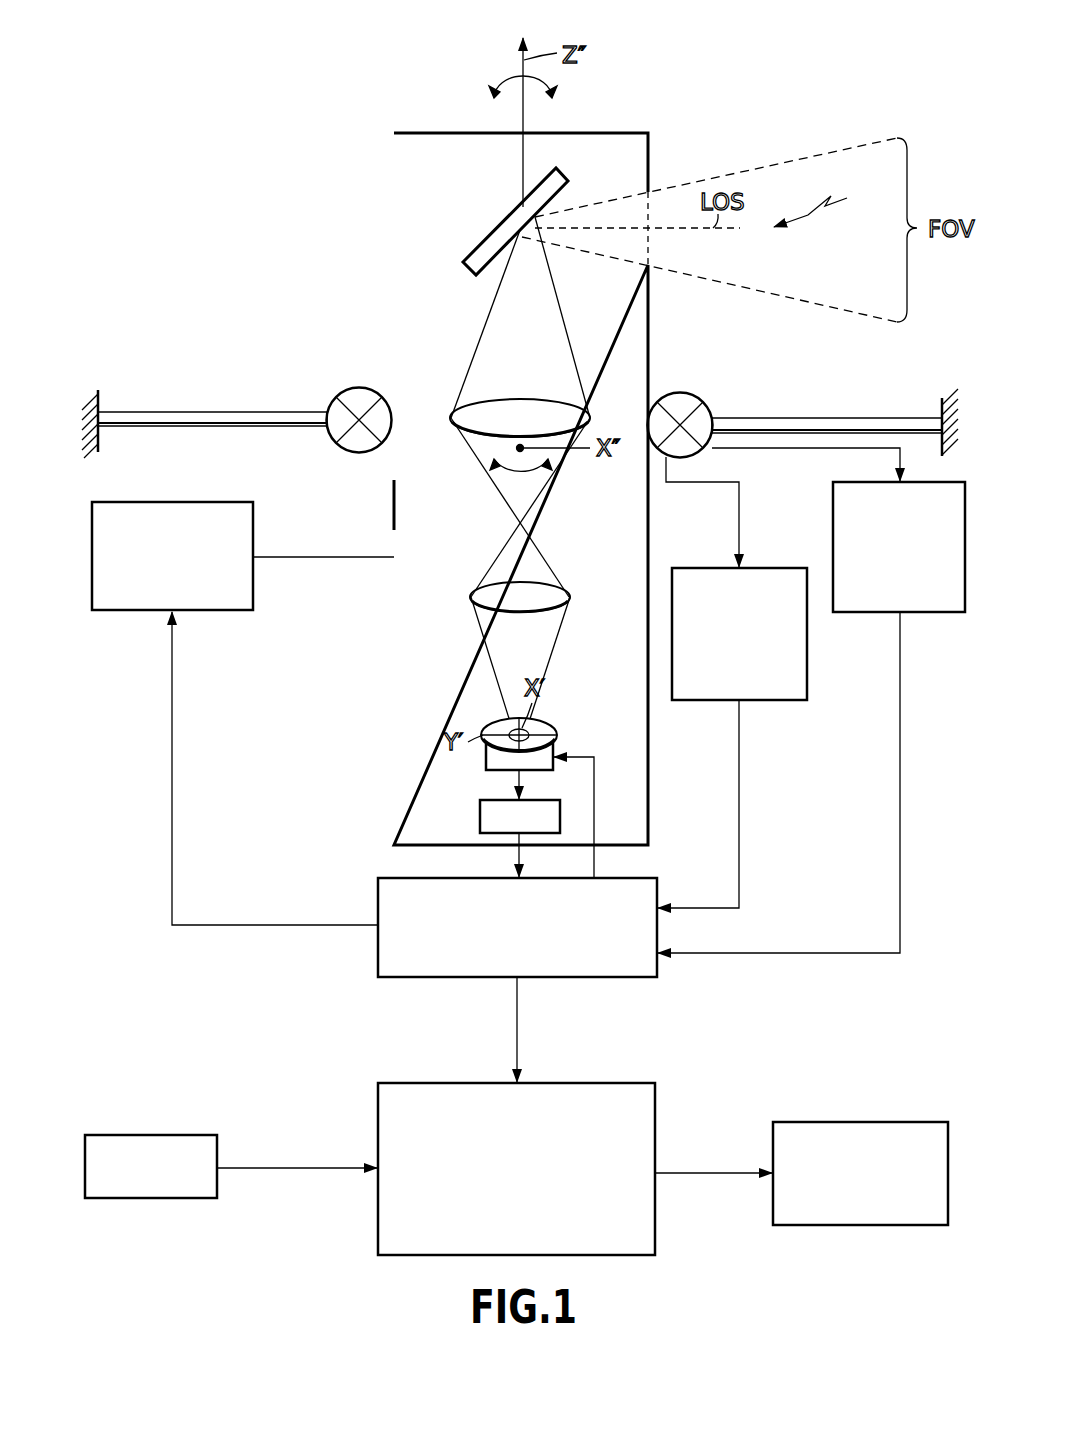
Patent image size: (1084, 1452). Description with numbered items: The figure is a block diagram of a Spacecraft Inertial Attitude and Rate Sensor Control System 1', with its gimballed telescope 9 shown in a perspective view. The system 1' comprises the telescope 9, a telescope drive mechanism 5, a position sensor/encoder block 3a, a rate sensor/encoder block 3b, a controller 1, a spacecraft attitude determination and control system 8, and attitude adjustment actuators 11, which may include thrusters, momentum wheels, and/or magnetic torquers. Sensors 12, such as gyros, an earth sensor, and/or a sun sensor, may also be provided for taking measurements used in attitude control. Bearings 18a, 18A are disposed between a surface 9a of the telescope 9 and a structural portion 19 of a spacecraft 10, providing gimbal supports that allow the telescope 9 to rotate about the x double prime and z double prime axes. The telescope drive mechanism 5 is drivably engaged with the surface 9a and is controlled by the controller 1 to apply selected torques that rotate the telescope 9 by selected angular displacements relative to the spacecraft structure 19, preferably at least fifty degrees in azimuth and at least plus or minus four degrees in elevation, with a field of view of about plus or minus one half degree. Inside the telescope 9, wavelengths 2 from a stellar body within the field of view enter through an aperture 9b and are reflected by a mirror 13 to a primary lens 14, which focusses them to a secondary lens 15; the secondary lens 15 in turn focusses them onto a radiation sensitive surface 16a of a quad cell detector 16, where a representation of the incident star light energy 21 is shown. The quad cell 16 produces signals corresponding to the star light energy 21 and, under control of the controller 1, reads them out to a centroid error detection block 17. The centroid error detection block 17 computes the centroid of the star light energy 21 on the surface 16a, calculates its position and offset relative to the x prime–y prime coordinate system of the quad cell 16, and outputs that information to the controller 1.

The Spacecraft Inertial Attitude and Rate Sensor Control System 1' is at (236, 87).
The controller 1 is at (517, 927).
The wavelengths 2 is at (834, 202).
The position sensor/encoder block 3a is at (833, 517).
The rate sensor/encoder block 3b is at (808, 664).
The telescope drive mechanism 5 is at (253, 597).
The spacecraft attitude determination and control system 8 is at (378, 1123).
The telescope 9 is at (394, 143).
The surface of the telescope 9a is at (393, 503).
The aperture 9b is at (648, 240).
The spacecraft 10 is at (98, 397).
The attitude adjustment actuators 11 is at (880, 1122).
The sensors 12 is at (203, 1135).
The mirror 13 is at (493, 234).
The primary lens 14 is at (461, 407).
The secondary lens 15 is at (480, 607).
The quad cell detector 16 is at (553, 749).
The radiation sensitive surface 16a is at (549, 722).
The centroid error detection block 17 is at (480, 820).
The bearings 18a is at (347, 391).
The bearings 18A is at (712, 407).
The structural portion of the spacecraft 19 is at (158, 412).
The star light energy 21 is at (508, 728).